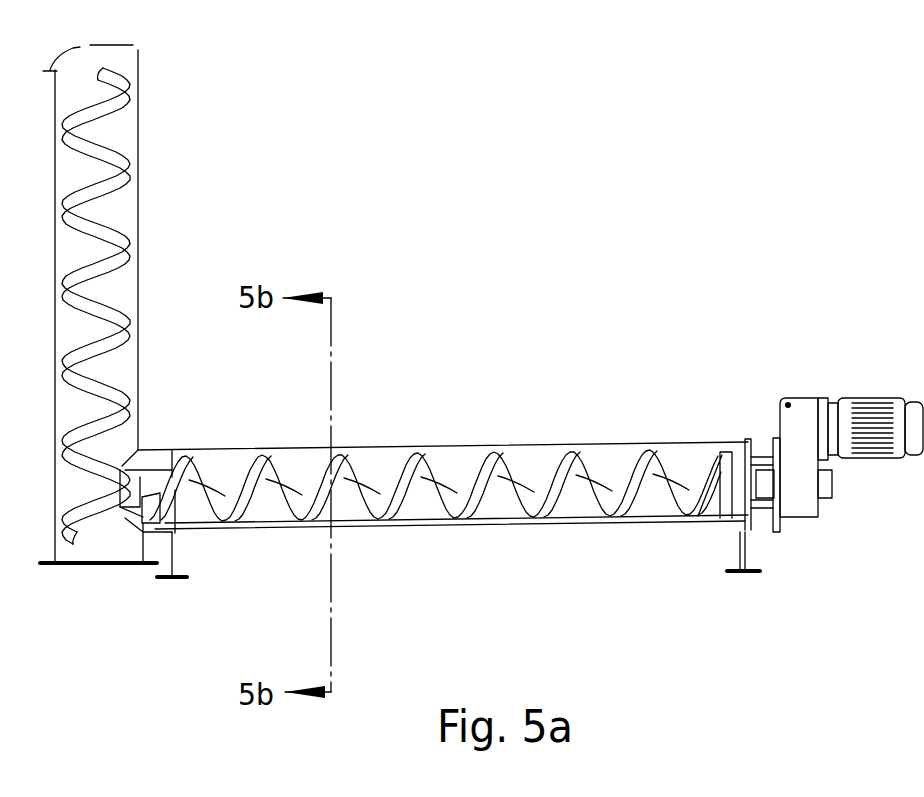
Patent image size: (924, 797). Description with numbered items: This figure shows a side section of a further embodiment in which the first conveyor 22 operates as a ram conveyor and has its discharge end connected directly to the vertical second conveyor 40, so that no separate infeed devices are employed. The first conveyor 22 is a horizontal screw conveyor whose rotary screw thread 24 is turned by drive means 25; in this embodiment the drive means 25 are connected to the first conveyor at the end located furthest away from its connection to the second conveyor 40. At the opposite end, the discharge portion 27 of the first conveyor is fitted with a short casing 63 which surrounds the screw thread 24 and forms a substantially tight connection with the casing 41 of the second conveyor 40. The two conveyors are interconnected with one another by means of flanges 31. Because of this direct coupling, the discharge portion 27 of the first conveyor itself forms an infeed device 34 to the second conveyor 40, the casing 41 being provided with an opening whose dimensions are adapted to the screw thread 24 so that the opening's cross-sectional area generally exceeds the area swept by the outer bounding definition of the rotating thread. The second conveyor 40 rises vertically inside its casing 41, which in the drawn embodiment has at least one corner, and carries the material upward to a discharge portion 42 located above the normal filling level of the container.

The first conveyor 22 is at (503, 527).
The screw thread 24 is at (440, 452).
The drive means 25 is at (870, 398).
The discharge portion 27 is at (153, 533).
The flanges 31 is at (192, 530).
The infeed device 34 is at (167, 425).
The second conveyor 40 is at (120, 150).
The casing 41 is at (125, 198).
The discharge portion 42 is at (138, 268).
The short casing 63 is at (207, 527).